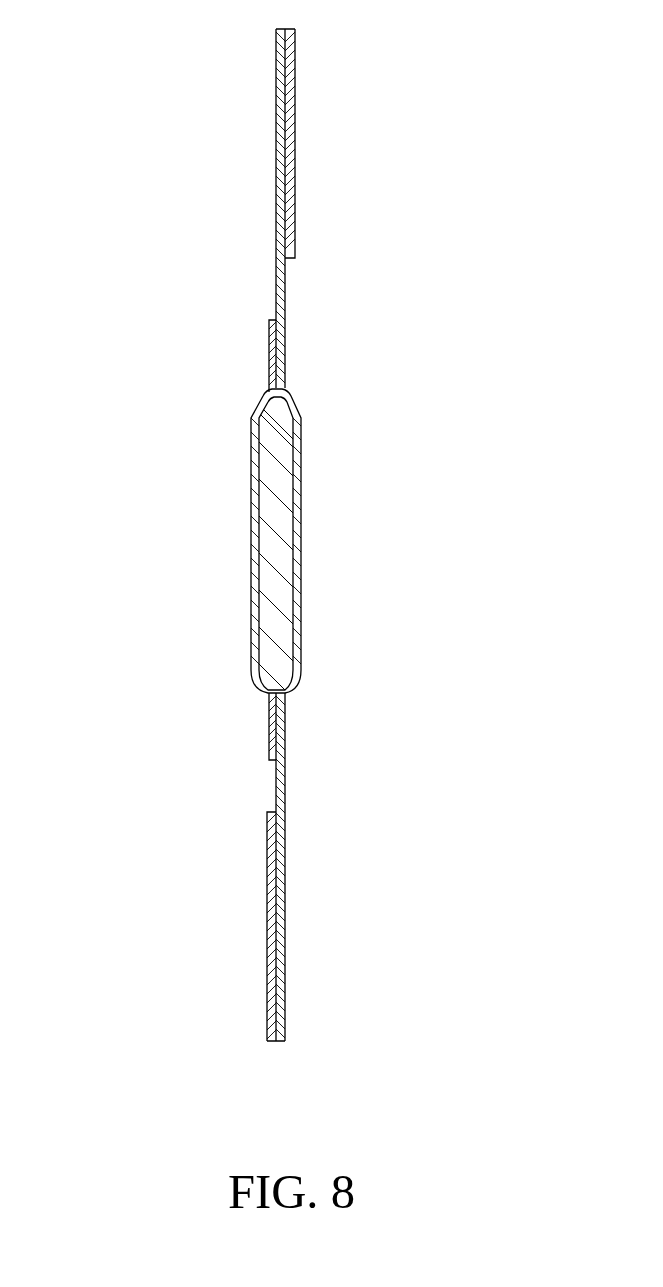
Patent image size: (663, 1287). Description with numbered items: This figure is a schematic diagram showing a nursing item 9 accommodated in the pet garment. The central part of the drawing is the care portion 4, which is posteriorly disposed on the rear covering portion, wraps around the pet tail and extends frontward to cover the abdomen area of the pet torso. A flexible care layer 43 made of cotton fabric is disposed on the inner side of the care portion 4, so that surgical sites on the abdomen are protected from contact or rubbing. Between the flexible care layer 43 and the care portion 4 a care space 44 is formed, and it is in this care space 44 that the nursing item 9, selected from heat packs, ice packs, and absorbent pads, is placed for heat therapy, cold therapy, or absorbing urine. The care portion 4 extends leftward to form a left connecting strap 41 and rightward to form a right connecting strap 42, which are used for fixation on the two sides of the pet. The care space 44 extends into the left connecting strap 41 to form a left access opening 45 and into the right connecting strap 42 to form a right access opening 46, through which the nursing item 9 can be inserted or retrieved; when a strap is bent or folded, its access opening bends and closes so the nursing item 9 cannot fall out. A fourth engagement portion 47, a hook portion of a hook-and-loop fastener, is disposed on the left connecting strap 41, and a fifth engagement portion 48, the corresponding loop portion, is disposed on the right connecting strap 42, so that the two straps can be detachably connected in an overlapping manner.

The care portion 4 is at (287, 546).
The nursing item 9 is at (273, 453).
The left connecting strap 41 is at (285, 975).
The right connecting strap 42 is at (285, 108).
The flexible care layer 43 is at (258, 530).
The care space 44 is at (300, 640).
The left access opening 45 is at (270, 760).
The right access opening 46 is at (270, 320).
The fourth engagement portion 47 is at (270, 918).
The fifth engagement portion 48 is at (293, 130).